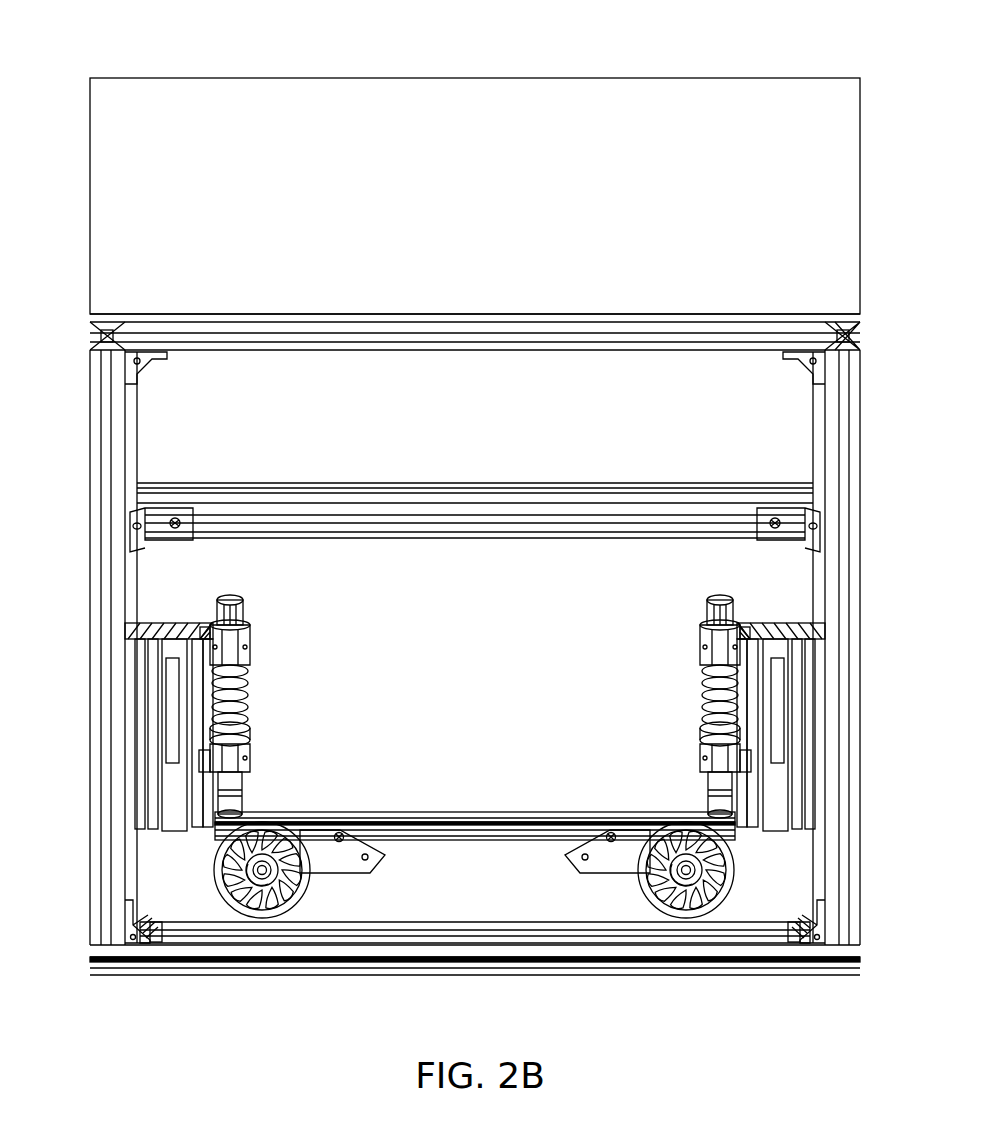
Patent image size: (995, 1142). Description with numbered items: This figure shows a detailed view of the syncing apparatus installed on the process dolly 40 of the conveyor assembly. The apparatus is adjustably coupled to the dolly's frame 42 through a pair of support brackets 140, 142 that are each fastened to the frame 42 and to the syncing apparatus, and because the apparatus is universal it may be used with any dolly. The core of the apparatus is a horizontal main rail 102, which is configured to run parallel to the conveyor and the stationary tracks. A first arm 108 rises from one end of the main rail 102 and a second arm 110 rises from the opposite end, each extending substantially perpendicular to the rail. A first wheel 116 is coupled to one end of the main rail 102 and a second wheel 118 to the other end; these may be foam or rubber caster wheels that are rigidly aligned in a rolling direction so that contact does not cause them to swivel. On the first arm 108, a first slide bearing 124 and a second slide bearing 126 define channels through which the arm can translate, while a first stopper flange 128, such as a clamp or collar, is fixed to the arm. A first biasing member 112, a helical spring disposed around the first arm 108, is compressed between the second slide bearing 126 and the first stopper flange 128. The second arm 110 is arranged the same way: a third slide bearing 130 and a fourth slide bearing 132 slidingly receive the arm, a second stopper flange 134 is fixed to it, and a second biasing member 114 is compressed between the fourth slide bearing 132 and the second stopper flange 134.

The process dolly 40 is at (610, 95).
The frame 42 is at (98, 606).
The main rail 102 is at (498, 812).
The first arm 108 is at (245, 628).
The second arm 110 is at (707, 607).
The first biasing member 112 is at (250, 690).
The second biasing member 114 is at (699, 690).
The first wheel 116 is at (260, 914).
The second wheel 118 is at (684, 914).
The first slide bearing 124 is at (252, 753).
The second slide bearing 126 is at (252, 652).
The first stopper flange 128 is at (252, 726).
The third slide bearing 130 is at (697, 754).
The fourth slide bearing 132 is at (697, 644).
The second stopper flange 134 is at (698, 731).
The support bracket 140 is at (188, 815).
The support bracket 142 is at (757, 817).